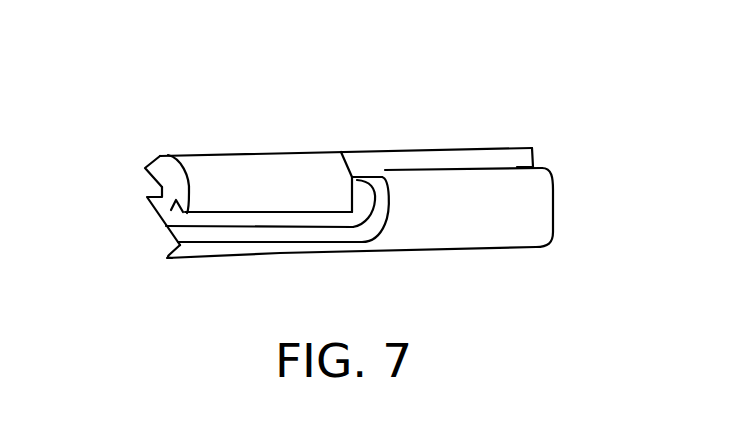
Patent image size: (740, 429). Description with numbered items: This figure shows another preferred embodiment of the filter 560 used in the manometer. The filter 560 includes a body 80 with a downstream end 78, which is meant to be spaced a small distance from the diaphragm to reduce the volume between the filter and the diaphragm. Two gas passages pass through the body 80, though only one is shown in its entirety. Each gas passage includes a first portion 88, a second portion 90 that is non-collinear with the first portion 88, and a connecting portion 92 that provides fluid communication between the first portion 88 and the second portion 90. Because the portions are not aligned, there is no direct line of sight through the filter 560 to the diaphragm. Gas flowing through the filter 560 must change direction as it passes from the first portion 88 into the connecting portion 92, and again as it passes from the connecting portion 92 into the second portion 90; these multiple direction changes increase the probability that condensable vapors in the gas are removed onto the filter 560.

The filter 560 is at (539, 109).
The first portion 88 is at (518, 160).
The body 80 is at (488, 237).
The connecting portion 92 is at (362, 197).
The downstream end 78 is at (152, 223).
The second portion 90 is at (141, 185).